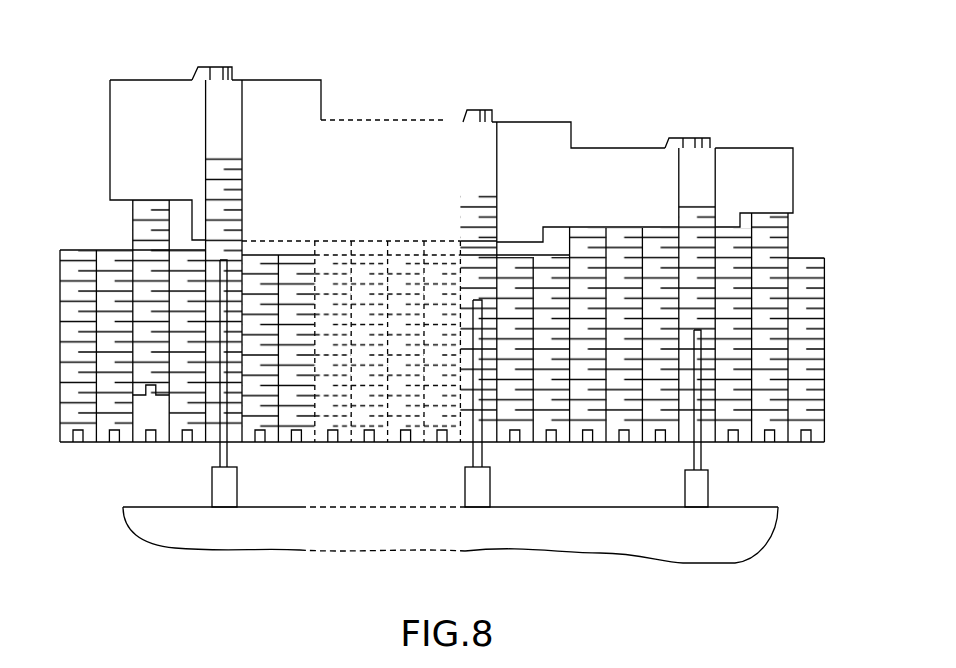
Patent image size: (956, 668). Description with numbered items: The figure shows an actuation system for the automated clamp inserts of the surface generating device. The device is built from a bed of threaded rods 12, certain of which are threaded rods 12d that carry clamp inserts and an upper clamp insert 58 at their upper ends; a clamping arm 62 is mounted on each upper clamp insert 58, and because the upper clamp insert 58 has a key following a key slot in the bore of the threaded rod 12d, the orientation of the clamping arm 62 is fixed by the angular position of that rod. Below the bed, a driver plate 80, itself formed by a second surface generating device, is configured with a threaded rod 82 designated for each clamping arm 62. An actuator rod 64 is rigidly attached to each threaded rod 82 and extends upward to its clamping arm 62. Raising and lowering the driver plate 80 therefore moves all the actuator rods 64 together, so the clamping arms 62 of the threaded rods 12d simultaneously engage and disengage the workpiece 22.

The threaded rod 12 is at (807, 403).
The threaded rod 12d is at (222, 144).
The workpiece 22 is at (597, 148).
The upper clamp insert 58 is at (238, 79).
The clamping arm 62 is at (196, 67).
The actuator rod 64 is at (227, 388).
The driver plate 80 is at (535, 542).
The threaded rod 82 is at (228, 490).